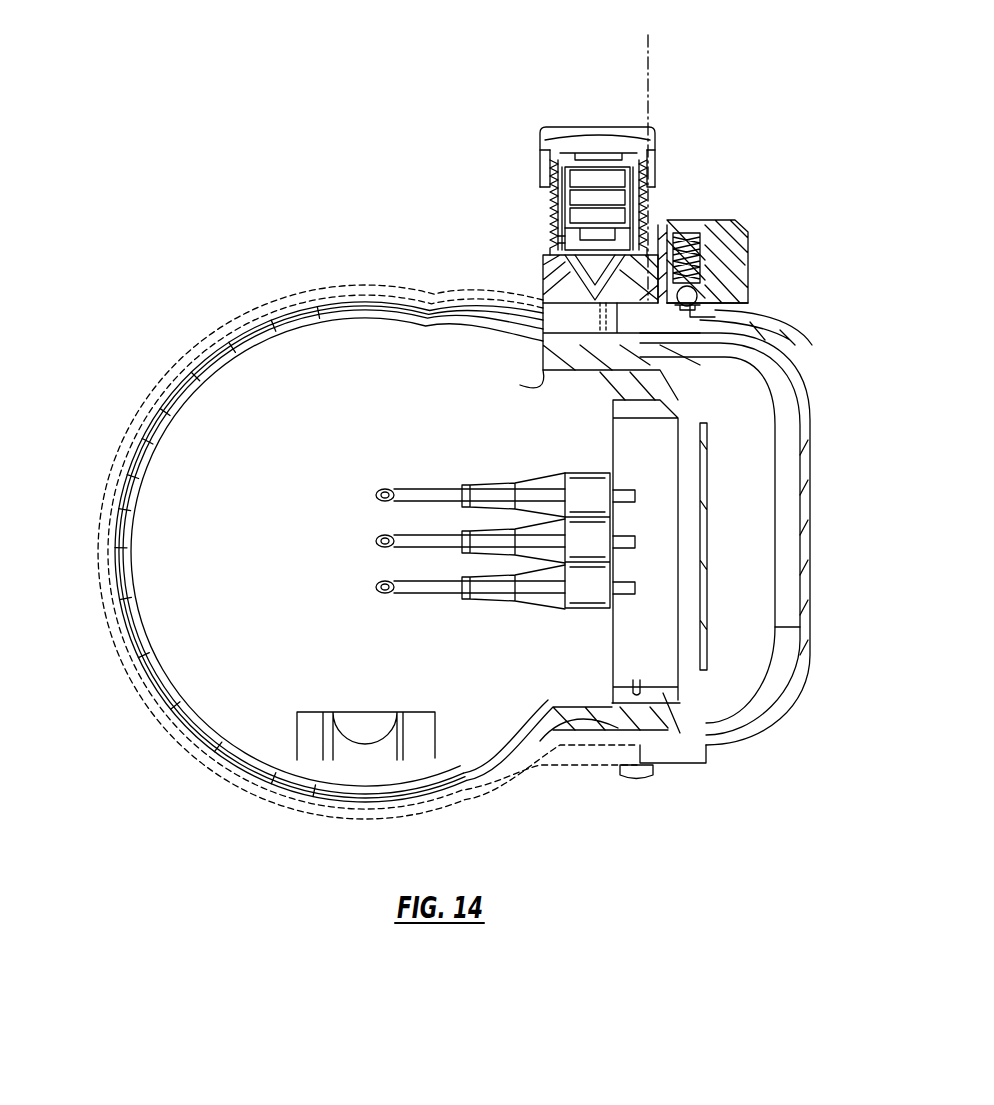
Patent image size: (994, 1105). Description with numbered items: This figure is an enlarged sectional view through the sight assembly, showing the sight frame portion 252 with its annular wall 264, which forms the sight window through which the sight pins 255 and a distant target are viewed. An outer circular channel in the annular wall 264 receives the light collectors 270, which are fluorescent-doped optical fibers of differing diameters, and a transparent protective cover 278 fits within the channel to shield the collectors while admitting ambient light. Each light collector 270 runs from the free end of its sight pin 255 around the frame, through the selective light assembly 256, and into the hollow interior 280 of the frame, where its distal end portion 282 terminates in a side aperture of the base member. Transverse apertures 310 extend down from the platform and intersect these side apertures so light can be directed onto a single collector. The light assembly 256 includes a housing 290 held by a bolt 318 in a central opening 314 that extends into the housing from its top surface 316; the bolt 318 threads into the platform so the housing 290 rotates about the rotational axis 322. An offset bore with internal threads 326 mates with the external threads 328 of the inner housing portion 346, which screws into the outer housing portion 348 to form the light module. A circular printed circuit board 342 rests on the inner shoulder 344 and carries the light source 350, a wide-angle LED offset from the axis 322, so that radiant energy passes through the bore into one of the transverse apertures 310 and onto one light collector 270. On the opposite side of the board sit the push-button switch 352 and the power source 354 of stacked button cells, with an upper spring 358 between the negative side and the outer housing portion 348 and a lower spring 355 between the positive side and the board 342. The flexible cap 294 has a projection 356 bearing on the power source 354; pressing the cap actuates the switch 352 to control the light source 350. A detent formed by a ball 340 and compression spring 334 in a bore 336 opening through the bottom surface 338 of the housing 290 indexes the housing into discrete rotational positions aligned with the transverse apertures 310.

The sight frame portion 252 is at (228, 322).
The protective cover 278 is at (152, 396).
The annular wall 264 is at (128, 520).
The light collectors 270 is at (130, 640).
The hollow interior 280 is at (745, 495).
The distal end portion 282 is at (712, 565).
The ball 340 is at (792, 340).
The sight pins 255 is at (525, 485).
The transverse apertures 310 is at (545, 352).
The inner shoulder 344 is at (590, 270).
The light source 350 is at (605, 270).
The selective light assembly 256 is at (497, 137).
The rotational axis 322 is at (650, 65).
The upper spring 358 is at (546, 170).
The power source 354 is at (546, 155).
The projection 356 is at (600, 150).
The flexible cap 294 is at (636, 135).
The inner housing portion 346 is at (550, 195).
The outer housing portion 348 is at (640, 160).
The push-button switch 352 is at (590, 165).
The lower spring 355 is at (550, 210).
The external threads 328 is at (550, 232).
The printed circuit board 342 is at (548, 243).
The internal threads 326 is at (545, 258).
The bolt 318 is at (662, 225).
The central opening 314 is at (741, 241).
The housing 290 is at (748, 263).
The top surface 316 is at (712, 220).
The bore 336 is at (705, 250).
The compression spring 334 is at (700, 283).
The bottom surface 338 is at (705, 303).